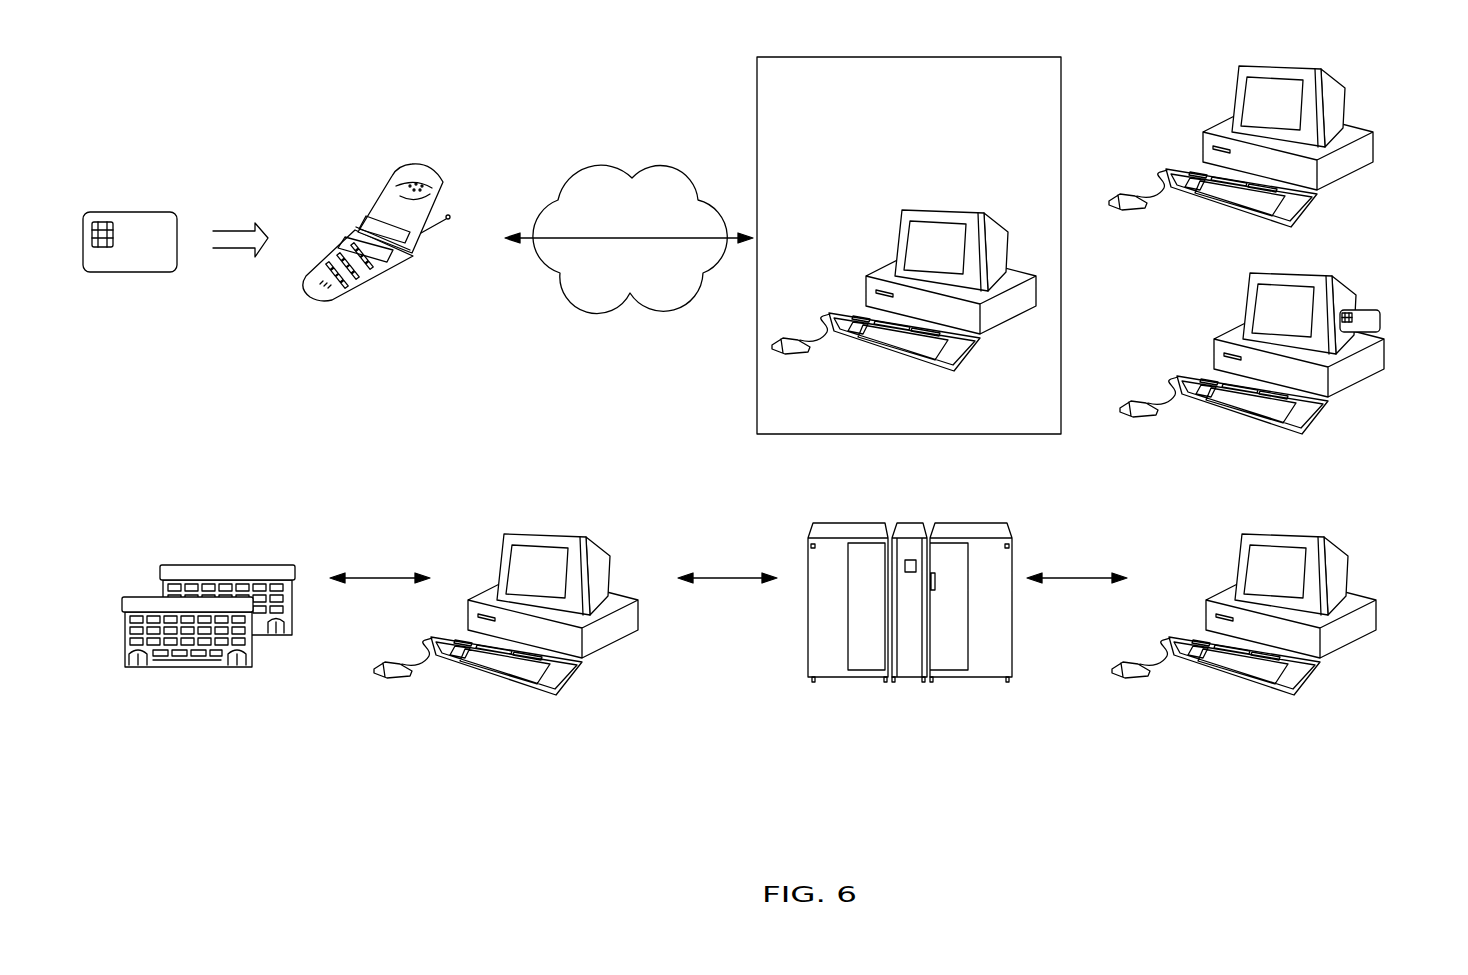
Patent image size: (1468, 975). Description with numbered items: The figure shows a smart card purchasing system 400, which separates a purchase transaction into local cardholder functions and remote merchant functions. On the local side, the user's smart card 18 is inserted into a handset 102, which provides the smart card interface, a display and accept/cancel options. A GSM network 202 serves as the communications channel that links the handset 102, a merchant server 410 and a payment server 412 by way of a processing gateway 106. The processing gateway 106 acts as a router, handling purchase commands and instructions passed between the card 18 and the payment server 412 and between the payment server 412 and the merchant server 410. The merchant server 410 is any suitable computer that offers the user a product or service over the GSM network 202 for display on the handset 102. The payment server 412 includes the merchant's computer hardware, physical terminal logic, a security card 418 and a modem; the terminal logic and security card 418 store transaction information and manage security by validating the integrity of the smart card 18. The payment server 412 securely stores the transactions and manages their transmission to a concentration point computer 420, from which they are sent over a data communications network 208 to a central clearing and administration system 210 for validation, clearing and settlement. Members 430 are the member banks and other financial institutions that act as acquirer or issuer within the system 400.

The smart card 18 is at (131, 272).
The handset 102 is at (385, 265).
The processing gateway 106 is at (757, 116).
The GSM network 202 is at (610, 312).
The data communications network 208 is at (908, 523).
The clearing and administration system 210 is at (542, 533).
The smart card purchasing system 400 is at (505, 820).
The merchant server 410 is at (1347, 103).
The payment server 412 is at (1350, 285).
The security card 418 is at (1382, 320).
The concentration point computer 420 is at (1348, 578).
The members 430 is at (226, 563).